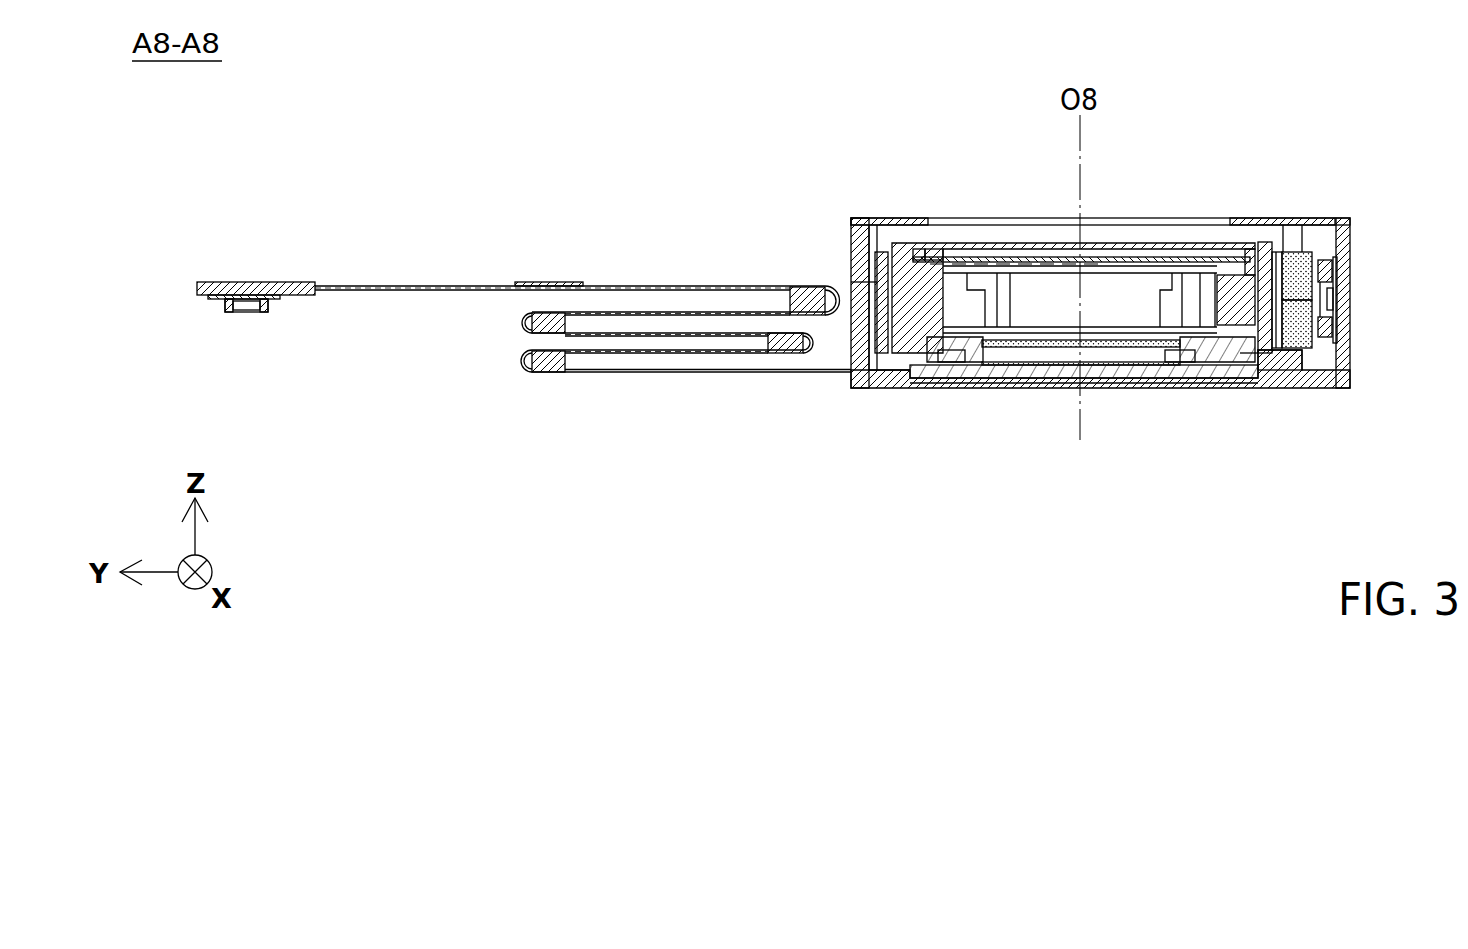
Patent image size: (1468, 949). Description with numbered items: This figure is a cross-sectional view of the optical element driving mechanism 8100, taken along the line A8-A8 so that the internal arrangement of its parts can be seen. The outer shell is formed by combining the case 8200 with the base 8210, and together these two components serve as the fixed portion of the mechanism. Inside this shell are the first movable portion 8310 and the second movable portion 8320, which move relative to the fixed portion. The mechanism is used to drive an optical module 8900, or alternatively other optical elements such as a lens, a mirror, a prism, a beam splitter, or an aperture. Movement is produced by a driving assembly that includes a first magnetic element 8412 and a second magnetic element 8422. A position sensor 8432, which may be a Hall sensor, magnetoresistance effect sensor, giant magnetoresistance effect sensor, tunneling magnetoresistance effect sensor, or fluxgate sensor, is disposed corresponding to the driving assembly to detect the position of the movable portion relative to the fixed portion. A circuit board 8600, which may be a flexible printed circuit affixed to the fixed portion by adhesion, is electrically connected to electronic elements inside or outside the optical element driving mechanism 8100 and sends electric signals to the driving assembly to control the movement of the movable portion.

The optical element driving mechanism 8100 is at (825, 198).
The case 8200 is at (1348, 232).
The base 8210 is at (1348, 360).
The first movable portion 8310 is at (1247, 255).
The second movable portion 8320 is at (1292, 352).
The first magnetic element 8412 is at (1294, 255).
The second magnetic element 8422 is at (1342, 268).
The position sensor 8432 is at (1333, 299).
The circuit board 8600 is at (1338, 331).
The optical module 8900 is at (958, 258).